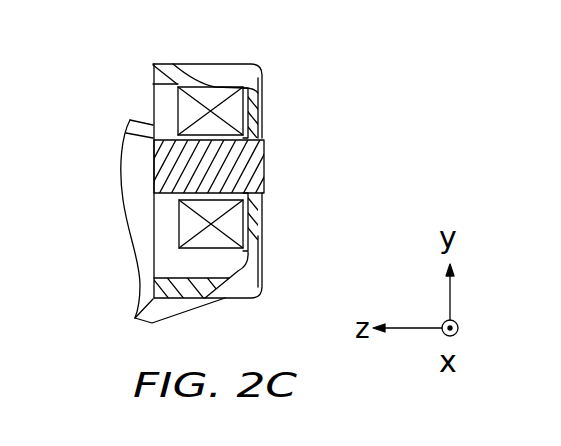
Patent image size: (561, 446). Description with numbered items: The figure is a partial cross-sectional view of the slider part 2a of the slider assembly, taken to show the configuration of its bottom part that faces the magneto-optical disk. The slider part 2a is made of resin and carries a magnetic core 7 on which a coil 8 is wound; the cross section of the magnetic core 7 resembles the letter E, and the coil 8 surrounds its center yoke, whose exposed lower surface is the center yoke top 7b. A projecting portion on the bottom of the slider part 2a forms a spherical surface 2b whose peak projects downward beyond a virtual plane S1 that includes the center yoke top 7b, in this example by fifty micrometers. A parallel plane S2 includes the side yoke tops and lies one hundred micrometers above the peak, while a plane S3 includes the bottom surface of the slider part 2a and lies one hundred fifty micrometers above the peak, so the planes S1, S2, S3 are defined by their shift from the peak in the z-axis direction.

The slider part 2a is at (218, 64).
The spherical surface 2b is at (266, 244).
The coil 8 is at (179, 106).
The magnetic core 7 is at (153, 158).
The center yoke top 7b is at (265, 163).
The plane S1 is at (264, 138).
The plane S2 is at (262, 92).
The plane S3 is at (263, 76).